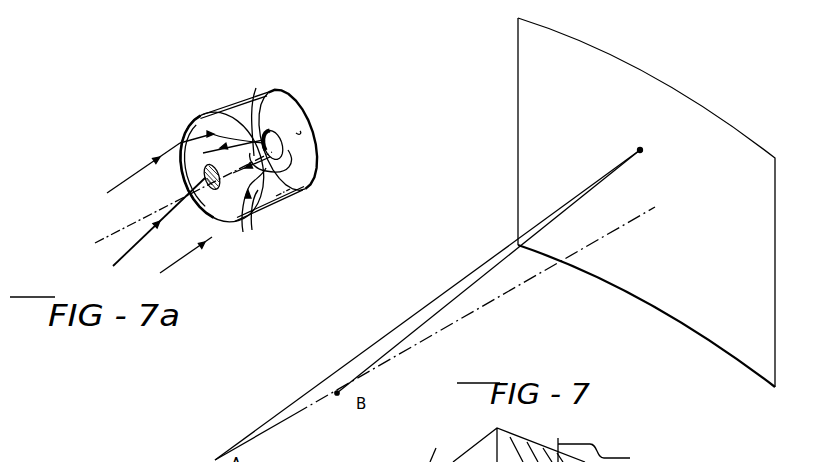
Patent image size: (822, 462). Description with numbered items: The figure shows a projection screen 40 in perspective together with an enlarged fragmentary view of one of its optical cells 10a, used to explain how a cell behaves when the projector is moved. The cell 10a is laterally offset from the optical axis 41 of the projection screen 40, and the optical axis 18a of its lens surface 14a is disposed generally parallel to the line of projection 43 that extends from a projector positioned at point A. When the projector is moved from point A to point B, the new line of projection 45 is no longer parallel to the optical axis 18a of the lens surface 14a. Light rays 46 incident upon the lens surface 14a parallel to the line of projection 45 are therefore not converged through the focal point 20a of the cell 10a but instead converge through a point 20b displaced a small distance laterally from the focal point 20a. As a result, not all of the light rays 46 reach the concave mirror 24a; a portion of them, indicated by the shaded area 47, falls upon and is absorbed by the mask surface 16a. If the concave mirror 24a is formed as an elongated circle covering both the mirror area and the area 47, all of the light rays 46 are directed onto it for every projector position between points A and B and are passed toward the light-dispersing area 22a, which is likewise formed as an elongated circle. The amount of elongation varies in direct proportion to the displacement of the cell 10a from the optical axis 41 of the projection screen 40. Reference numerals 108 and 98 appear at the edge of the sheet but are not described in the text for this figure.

In FIG. 7A, the optical cell 10a is at (248, 102).
In FIG. 7, the optical cell 10a is at (641, 148).
In FIG. 7A, the displaced convergence point 20b is at (256, 88).
In FIG. 7A, the shaded area 47 is at (264, 131).
In FIG. 7A, the mask surface 16a is at (298, 137).
In FIG. 7A, the concave mirror 24a is at (288, 148).
In FIG. 7A, the focal point 20a is at (301, 168).
In FIG. 7A, the light-dispersing area 22a is at (173, 140).
In FIG. 7A, the light rays 46 is at (126, 162).
In FIG. 7A, the optical axis of lens surface 18a is at (178, 200).
In FIG. 7A, the line of projection 43 is at (115, 233).
In FIG. 7, the line of projection 43 is at (353, 362).
In FIG. 7A, the new line of projection 45 is at (144, 228).
In FIG. 7, the new line of projection 45 is at (408, 333).
In FIG. 7A, the lens surface 14a is at (243, 234).
In FIG. 7, the projection screen 40 is at (690, 314).
In FIG. 7, the optical axis of projection screen 41 is at (491, 309).
In FIG. 7, the partial element 108 is at (507, 445).
In FIG. 7, the partial element 98 is at (602, 450).